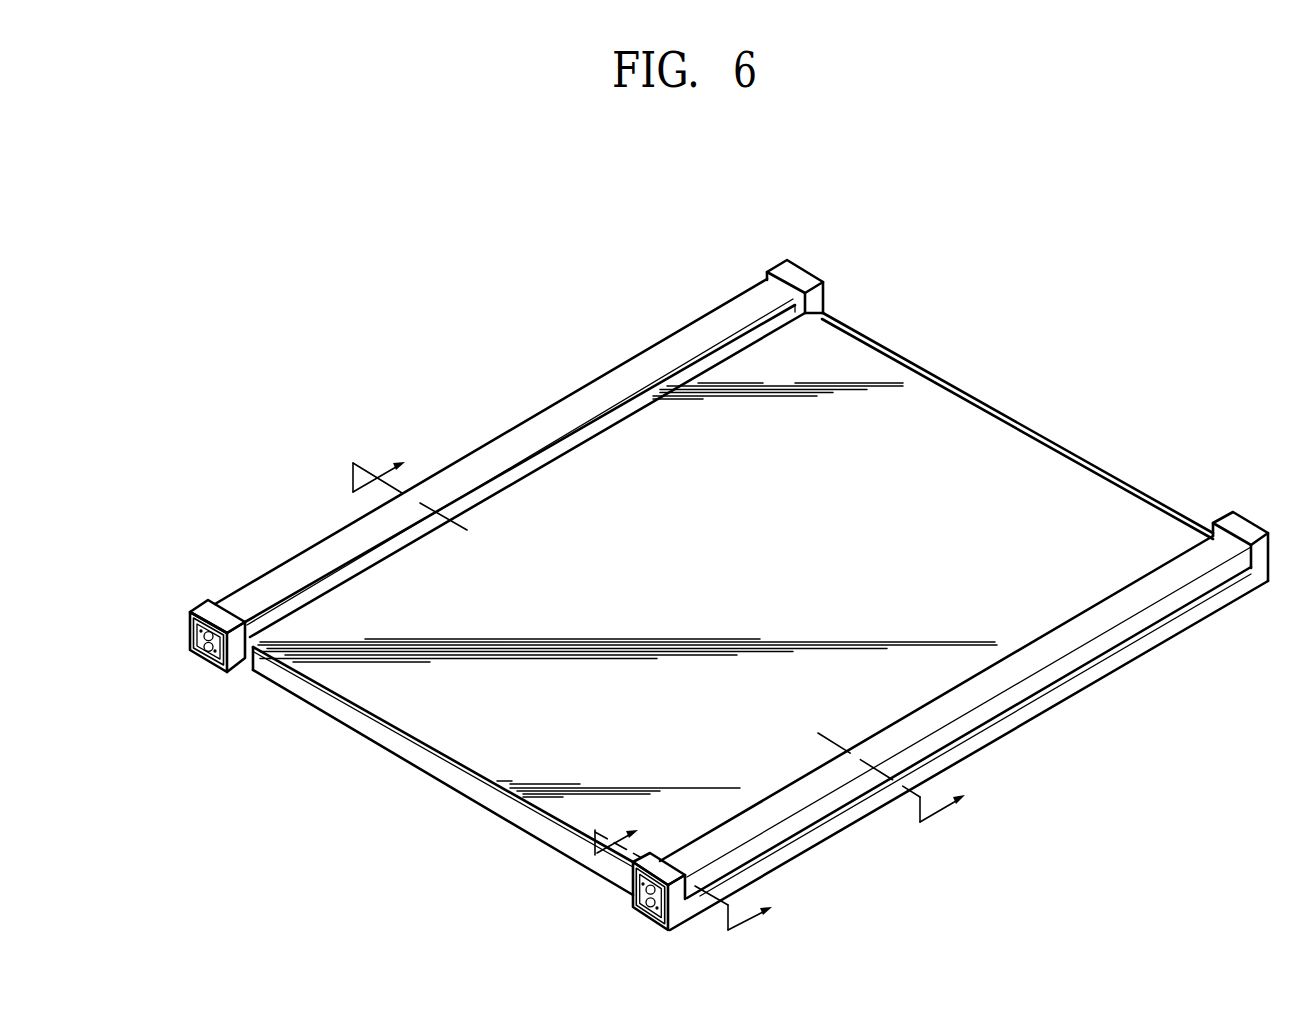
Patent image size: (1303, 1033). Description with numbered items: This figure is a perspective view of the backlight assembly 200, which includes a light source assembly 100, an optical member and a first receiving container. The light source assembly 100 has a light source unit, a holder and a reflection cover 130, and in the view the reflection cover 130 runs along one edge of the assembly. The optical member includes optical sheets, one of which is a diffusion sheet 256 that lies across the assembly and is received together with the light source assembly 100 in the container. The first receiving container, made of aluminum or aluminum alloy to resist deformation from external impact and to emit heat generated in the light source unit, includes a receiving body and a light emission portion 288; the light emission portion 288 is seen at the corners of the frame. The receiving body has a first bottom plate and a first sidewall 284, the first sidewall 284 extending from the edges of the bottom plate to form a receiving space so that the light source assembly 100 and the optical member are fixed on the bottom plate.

The light source assembly 100 is at (345, 412).
The reflection cover 130 is at (338, 531).
The backlight assembly 200 is at (1122, 443).
The diffusion sheet 256 is at (1155, 545).
The first sidewall 284 is at (478, 797).
The light emission portion 288 is at (205, 606).